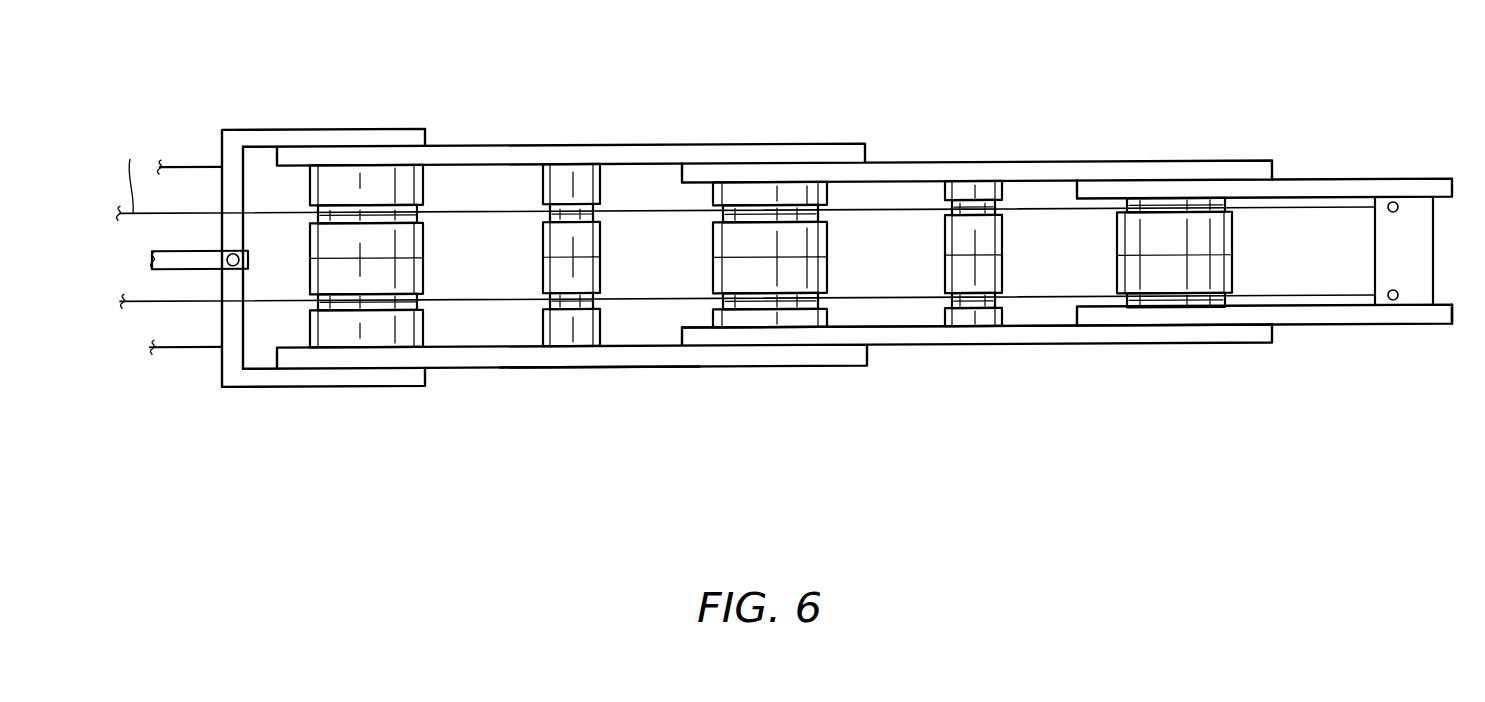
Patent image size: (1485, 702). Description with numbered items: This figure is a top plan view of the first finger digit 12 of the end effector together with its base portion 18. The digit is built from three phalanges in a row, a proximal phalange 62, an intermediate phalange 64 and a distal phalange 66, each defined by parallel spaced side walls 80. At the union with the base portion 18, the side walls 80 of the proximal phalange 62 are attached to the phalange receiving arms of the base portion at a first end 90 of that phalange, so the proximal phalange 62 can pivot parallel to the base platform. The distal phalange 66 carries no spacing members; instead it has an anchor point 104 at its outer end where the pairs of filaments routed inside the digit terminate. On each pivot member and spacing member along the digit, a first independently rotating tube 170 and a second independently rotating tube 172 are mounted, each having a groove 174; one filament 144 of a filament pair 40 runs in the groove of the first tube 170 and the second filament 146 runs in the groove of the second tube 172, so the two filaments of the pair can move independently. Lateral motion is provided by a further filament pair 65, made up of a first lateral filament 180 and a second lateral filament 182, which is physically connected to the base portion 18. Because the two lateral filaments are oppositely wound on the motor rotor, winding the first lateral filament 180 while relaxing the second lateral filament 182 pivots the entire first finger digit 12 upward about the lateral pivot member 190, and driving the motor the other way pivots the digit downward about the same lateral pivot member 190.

The first finger digit 12 is at (1378, 325).
The base portion 18 is at (255, 380).
The filament pair 40 is at (490, 300).
The proximal phalange 62 is at (578, 361).
The intermediate phalange 64 is at (1070, 336).
The filament pair 65 is at (139, 303).
The distal phalange 66 is at (1448, 315).
The side walls 80 is at (328, 160).
The first end 90 is at (312, 362).
The anchor point 104 is at (1415, 245).
The filament 144 is at (623, 213).
The second filament 146 is at (647, 304).
The first independently rotating tube 170 is at (813, 190).
The second independently rotating tube 172 is at (802, 320).
The groove 174 is at (755, 210).
The first lateral filament 180 is at (183, 168).
The second lateral filament 182 is at (188, 352).
The lateral pivot member 190 is at (258, 243).